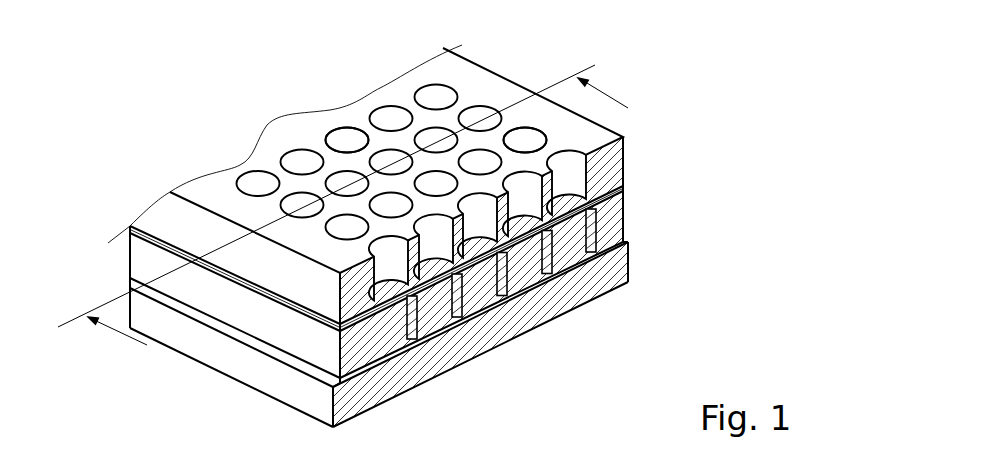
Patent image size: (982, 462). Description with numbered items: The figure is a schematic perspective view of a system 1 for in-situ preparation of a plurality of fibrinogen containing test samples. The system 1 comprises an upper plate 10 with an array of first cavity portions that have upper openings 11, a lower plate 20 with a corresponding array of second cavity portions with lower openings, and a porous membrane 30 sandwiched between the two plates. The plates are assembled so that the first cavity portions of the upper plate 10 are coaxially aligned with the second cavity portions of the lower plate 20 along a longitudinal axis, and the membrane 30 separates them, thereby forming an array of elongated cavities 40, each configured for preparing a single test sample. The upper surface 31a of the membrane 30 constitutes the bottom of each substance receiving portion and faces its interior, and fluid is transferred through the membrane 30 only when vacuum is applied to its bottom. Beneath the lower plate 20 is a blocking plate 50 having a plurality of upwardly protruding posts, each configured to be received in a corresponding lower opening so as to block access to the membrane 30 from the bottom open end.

The system 1 is at (489, 231).
The upper plate 10 is at (603, 175).
The upper openings 11 is at (441, 96).
The elongated cavities 40 is at (346, 139).
The porous membrane 30 is at (607, 195).
The upper surface 31a is at (410, 320).
The lower plate 20 is at (610, 228).
The blocking plate 50 is at (640, 271).